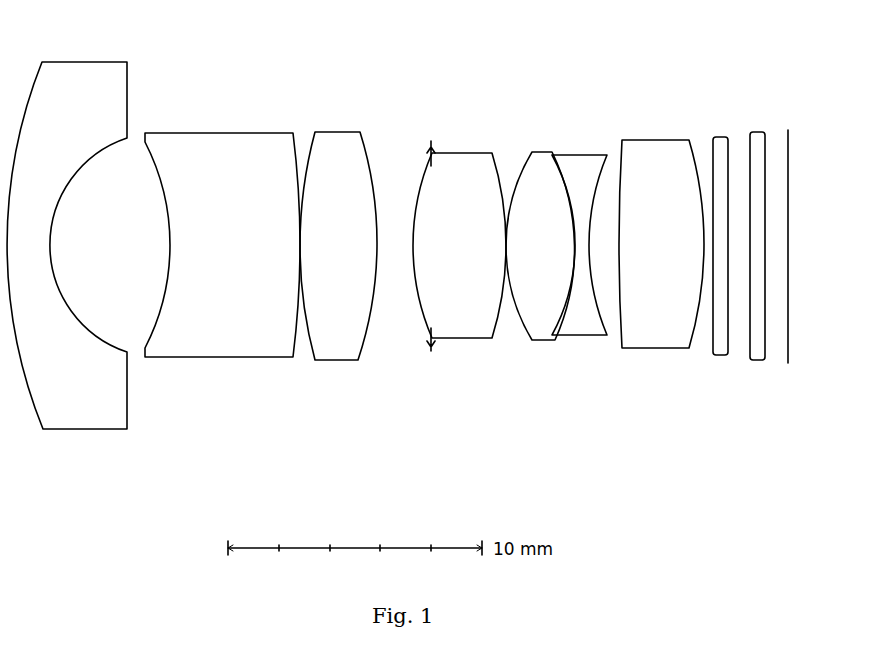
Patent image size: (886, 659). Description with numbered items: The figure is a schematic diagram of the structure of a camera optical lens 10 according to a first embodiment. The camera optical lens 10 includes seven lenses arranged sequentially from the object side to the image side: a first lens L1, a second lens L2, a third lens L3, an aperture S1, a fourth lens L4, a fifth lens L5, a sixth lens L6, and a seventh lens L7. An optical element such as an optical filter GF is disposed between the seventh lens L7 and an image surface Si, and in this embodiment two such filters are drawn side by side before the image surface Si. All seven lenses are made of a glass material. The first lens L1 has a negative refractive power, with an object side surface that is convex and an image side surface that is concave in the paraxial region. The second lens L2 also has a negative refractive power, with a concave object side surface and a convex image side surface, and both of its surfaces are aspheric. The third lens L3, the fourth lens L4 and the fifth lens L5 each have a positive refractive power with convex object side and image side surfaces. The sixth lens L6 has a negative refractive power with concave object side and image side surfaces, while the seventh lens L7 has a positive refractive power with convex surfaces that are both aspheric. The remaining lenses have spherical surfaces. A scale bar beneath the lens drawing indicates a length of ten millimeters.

The camera optical lens 10 is at (423, 32).
The first lens L1 is at (67, 229).
The second lens L2 is at (222, 232).
The third lens L3 is at (338, 232).
The aperture S1 is at (424, 236).
The fourth lens L4 is at (459, 232).
The fifth lens L5 is at (540, 233).
The sixth lens L6 is at (579, 228).
The seventh lens L7 is at (661, 226).
The optical filter GF is at (727, 231).
The image surface Si is at (783, 220).